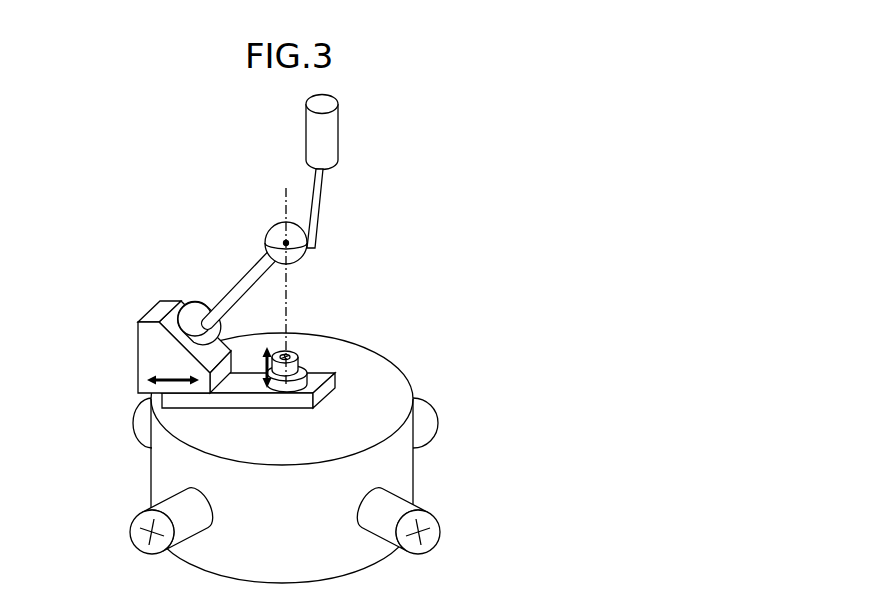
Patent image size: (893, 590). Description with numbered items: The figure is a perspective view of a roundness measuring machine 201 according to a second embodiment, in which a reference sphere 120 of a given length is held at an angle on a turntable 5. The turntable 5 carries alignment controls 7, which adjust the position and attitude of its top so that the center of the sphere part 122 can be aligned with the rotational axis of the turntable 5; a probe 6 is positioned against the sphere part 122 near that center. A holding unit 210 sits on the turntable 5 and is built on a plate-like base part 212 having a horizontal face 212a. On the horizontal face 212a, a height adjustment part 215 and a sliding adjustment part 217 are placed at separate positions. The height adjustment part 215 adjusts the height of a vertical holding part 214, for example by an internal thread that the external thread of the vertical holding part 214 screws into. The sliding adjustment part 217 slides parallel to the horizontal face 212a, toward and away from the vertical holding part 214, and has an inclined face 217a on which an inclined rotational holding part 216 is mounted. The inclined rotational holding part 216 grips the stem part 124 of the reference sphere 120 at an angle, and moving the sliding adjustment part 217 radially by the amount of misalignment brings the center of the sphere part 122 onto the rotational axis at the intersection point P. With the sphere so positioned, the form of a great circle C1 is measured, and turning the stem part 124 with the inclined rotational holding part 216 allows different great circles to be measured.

The roundness measuring machine 201 is at (505, 190).
The turntable 5 is at (370, 418).
The alignment controls 7 is at (441, 531).
The probe 6 is at (320, 209).
The reference sphere 120 is at (276, 218).
The sphere part 122 is at (306, 212).
The stem part 124 is at (250, 278).
The intersection point P is at (293, 228).
The great circle C1 is at (306, 248).
The holding unit 210 is at (142, 314).
The base part 212 is at (314, 394).
The horizontal face 212a is at (248, 382).
The vertical holding part 214 is at (300, 358).
The height adjustment part 215 is at (305, 378).
The inclined rotational holding part 216 is at (195, 305).
The sliding adjustment part 217 is at (142, 314).
The inclined face 217a is at (168, 318).